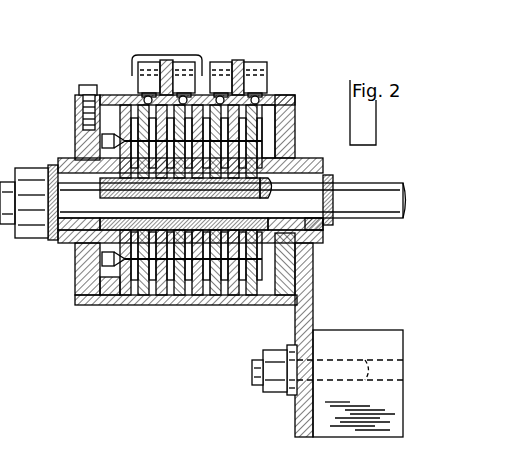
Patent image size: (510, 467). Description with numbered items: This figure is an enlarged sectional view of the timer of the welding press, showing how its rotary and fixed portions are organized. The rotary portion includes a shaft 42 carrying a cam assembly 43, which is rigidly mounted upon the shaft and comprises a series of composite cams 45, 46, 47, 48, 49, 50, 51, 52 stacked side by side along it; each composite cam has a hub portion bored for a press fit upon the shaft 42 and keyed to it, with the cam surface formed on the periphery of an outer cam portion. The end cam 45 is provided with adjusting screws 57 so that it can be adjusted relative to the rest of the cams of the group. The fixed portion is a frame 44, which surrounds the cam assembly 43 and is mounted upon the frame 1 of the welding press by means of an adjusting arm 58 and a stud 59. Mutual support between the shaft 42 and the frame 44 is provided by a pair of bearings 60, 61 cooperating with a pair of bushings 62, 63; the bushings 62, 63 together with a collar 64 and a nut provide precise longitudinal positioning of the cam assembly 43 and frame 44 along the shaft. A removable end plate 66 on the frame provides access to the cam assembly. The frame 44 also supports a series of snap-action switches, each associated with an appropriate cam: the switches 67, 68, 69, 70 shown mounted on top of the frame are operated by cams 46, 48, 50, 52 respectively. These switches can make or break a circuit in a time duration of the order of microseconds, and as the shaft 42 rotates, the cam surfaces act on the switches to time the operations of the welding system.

The frame 1 is at (394, 330).
The shaft 42 is at (378, 220).
The cam assembly 43 is at (265, 150).
The frame 44 is at (295, 110).
The composite cam 45 is at (130, 305).
The composite cam 46 is at (148, 305).
The composite cam 47 is at (166, 305).
The composite cam 48 is at (184, 305).
The composite cam 49 is at (203, 305).
The composite cam 50 is at (222, 305).
The composite cam 51 is at (241, 305).
The composite cam 52 is at (258, 305).
The adjusting screws 57 is at (102, 142).
The adjusting arm 58 is at (313, 291).
The stud 59 is at (252, 372).
The bearing 60 is at (58, 160).
The bearing 61 is at (332, 178).
The bushing 62 is at (60, 240).
The bushing 63 is at (318, 245).
The collar 64 is at (318, 230).
The removable end plate 66 is at (80, 120).
The switch 67 is at (150, 62).
The switch 68 is at (184, 62).
The switch 69 is at (221, 62).
The switch 70 is at (255, 62).